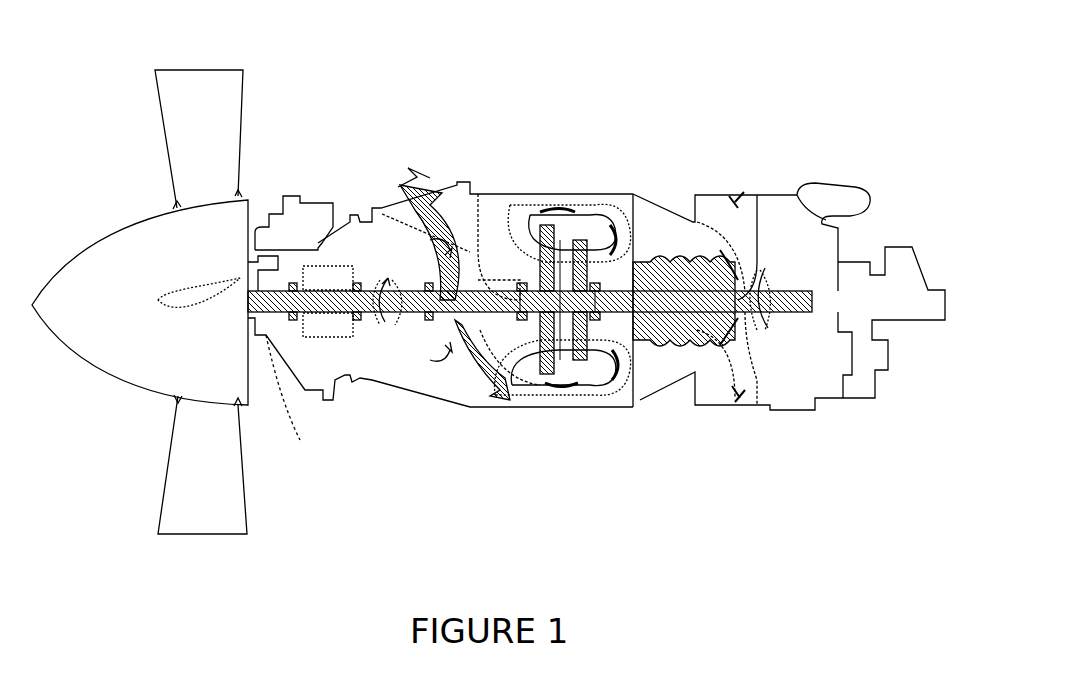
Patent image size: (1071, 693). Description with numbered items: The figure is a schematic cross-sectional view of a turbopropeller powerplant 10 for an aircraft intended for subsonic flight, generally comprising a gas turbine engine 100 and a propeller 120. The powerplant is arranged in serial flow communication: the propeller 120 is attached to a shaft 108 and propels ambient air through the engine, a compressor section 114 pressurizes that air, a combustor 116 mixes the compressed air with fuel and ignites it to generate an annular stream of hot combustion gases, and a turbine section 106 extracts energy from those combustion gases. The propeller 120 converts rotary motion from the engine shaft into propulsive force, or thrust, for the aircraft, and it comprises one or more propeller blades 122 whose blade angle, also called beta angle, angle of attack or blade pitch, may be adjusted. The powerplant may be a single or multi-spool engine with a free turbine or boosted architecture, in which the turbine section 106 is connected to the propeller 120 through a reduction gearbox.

The turbopropeller powerplant 10 is at (690, 28).
The gas turbine engine 100 is at (893, 168).
The turbine section 106 is at (478, 335).
The shaft 108 is at (440, 394).
The compressor section 114 is at (665, 346).
The combustor 116 is at (577, 214).
The propeller 120 is at (130, 202).
The propeller blades 122 is at (227, 105).